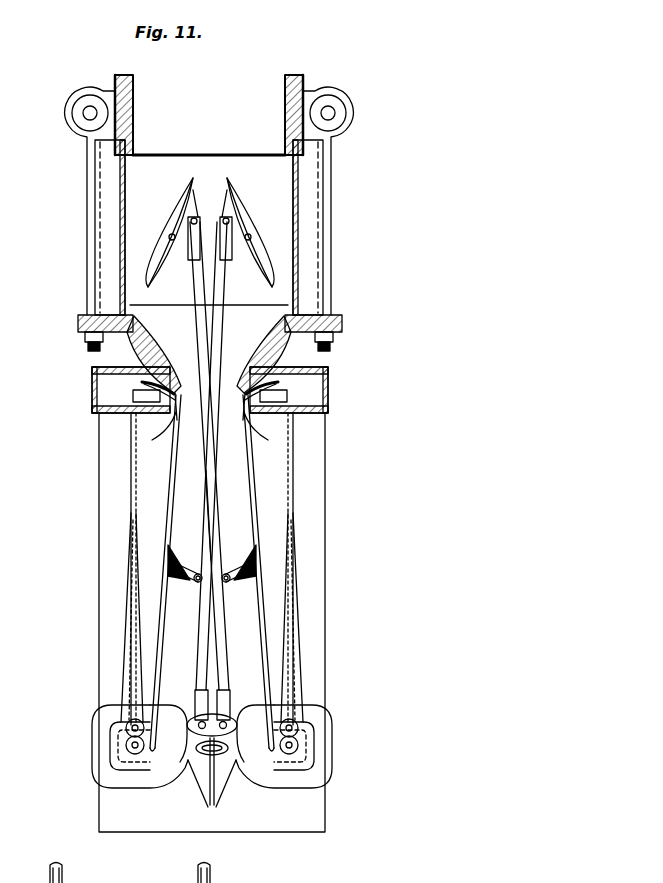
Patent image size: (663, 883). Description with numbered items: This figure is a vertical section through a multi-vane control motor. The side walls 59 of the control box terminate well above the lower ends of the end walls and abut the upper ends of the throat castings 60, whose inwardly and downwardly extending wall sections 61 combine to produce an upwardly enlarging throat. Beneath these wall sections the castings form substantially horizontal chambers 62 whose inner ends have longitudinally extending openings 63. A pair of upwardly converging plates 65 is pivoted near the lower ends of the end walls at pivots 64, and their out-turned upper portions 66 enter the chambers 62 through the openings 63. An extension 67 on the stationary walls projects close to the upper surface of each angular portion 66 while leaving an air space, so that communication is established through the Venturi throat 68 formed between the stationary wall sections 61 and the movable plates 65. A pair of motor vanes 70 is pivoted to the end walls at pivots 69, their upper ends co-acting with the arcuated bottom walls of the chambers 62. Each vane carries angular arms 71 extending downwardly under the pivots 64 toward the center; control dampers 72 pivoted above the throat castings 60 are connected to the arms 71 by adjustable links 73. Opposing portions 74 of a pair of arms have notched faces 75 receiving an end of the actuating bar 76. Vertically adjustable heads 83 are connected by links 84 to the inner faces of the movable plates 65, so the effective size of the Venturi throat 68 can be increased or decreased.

The side walls 59 is at (122, 240).
The throat castings 60 is at (343, 327).
The wall sections 61 is at (312, 356).
The chambers 62 is at (112, 401).
The openings 63 is at (163, 428).
The pivots 64 is at (128, 745).
The upwardly converging plates 65 is at (160, 622).
The out-turned portions 66 is at (200, 386).
The extension 67 is at (172, 383).
The Venturi throat 68 is at (206, 440).
The pivots 69 is at (127, 724).
The motor vanes 70 is at (131, 485).
The angular arms 71 is at (107, 776).
The control dampers 72 is at (242, 190).
The adjustable links 73 is at (205, 535).
The opposing portions 74 is at (212, 805).
The notches 75 is at (229, 722).
The actuating bar 76 is at (197, 748).
The vertically adjustable heads 83 is at (227, 574).
The links 84 is at (193, 583).